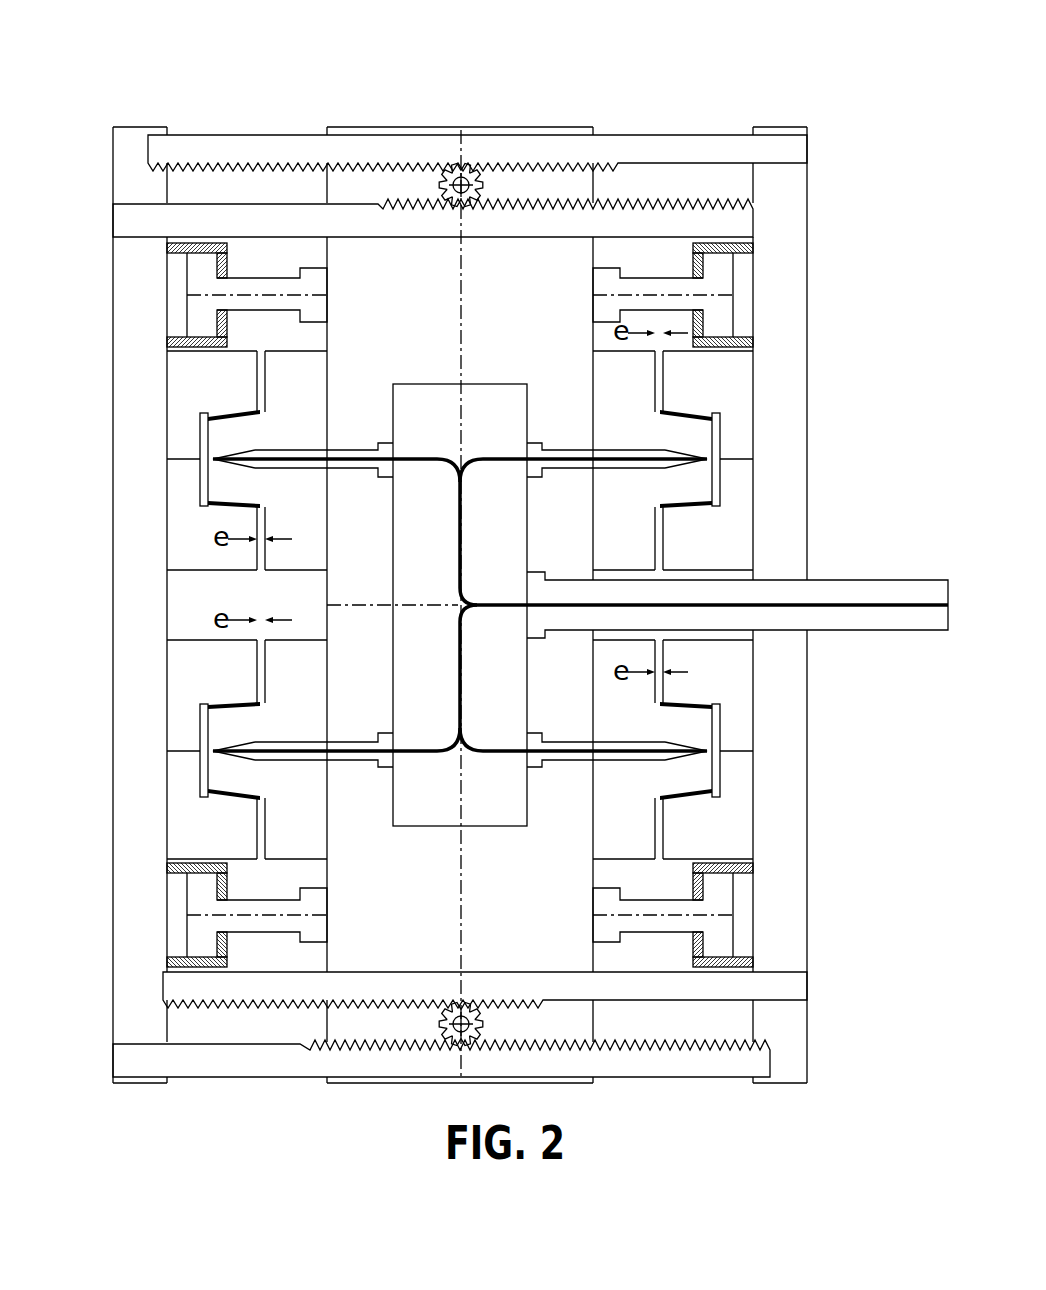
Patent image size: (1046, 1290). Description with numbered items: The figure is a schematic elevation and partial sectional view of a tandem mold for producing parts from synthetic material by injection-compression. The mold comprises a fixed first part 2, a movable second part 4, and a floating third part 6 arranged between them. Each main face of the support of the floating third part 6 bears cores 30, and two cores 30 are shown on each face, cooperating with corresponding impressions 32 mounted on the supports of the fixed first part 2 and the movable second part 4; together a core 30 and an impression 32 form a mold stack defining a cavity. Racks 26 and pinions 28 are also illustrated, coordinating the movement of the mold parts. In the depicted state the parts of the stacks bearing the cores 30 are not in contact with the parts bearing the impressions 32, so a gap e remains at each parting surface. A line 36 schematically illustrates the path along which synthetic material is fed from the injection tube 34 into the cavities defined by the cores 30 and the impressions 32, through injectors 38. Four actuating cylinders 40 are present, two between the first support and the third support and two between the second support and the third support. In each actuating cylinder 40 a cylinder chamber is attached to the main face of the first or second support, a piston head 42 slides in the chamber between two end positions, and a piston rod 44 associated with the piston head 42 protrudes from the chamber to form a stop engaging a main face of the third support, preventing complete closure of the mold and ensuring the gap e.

The fixed first part 2 is at (830, 141).
The movable second part 4 is at (128, 103).
The floating third part 6 is at (465, 100).
The rack 26 is at (557, 148).
The pinion 28 is at (455, 176).
The core 30 is at (237, 437).
The impression 32 is at (207, 413).
The injection tube 34 is at (913, 615).
The line 36 is at (491, 749).
The injector 38 is at (213, 460).
The actuating cylinder 40 is at (228, 272).
The piston head 42 is at (198, 313).
The piston rod 44 is at (287, 302).